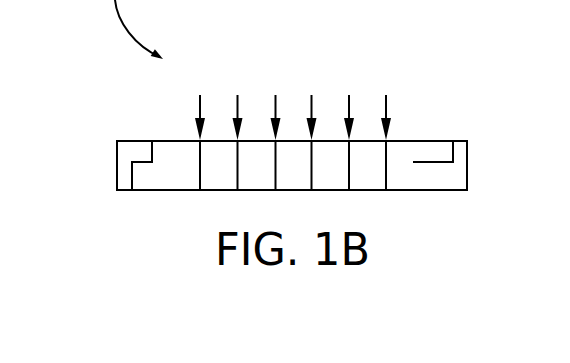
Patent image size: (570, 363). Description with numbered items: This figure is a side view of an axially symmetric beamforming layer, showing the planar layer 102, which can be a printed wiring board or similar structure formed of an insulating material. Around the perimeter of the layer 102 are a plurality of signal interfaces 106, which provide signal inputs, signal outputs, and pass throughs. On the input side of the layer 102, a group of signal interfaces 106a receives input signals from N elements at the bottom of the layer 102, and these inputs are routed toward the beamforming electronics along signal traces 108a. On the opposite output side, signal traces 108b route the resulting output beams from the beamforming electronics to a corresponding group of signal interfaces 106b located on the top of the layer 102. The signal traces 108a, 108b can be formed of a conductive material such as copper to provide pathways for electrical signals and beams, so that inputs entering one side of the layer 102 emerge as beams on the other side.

The layer 102 is at (467, 162).
The signal interfaces 106 is at (395, 98).
The signal interfaces 106a is at (118, 190).
The signal interfaces 106b is at (453, 141).
The signal traces 108a is at (153, 143).
The signal traces 108b is at (436, 162).